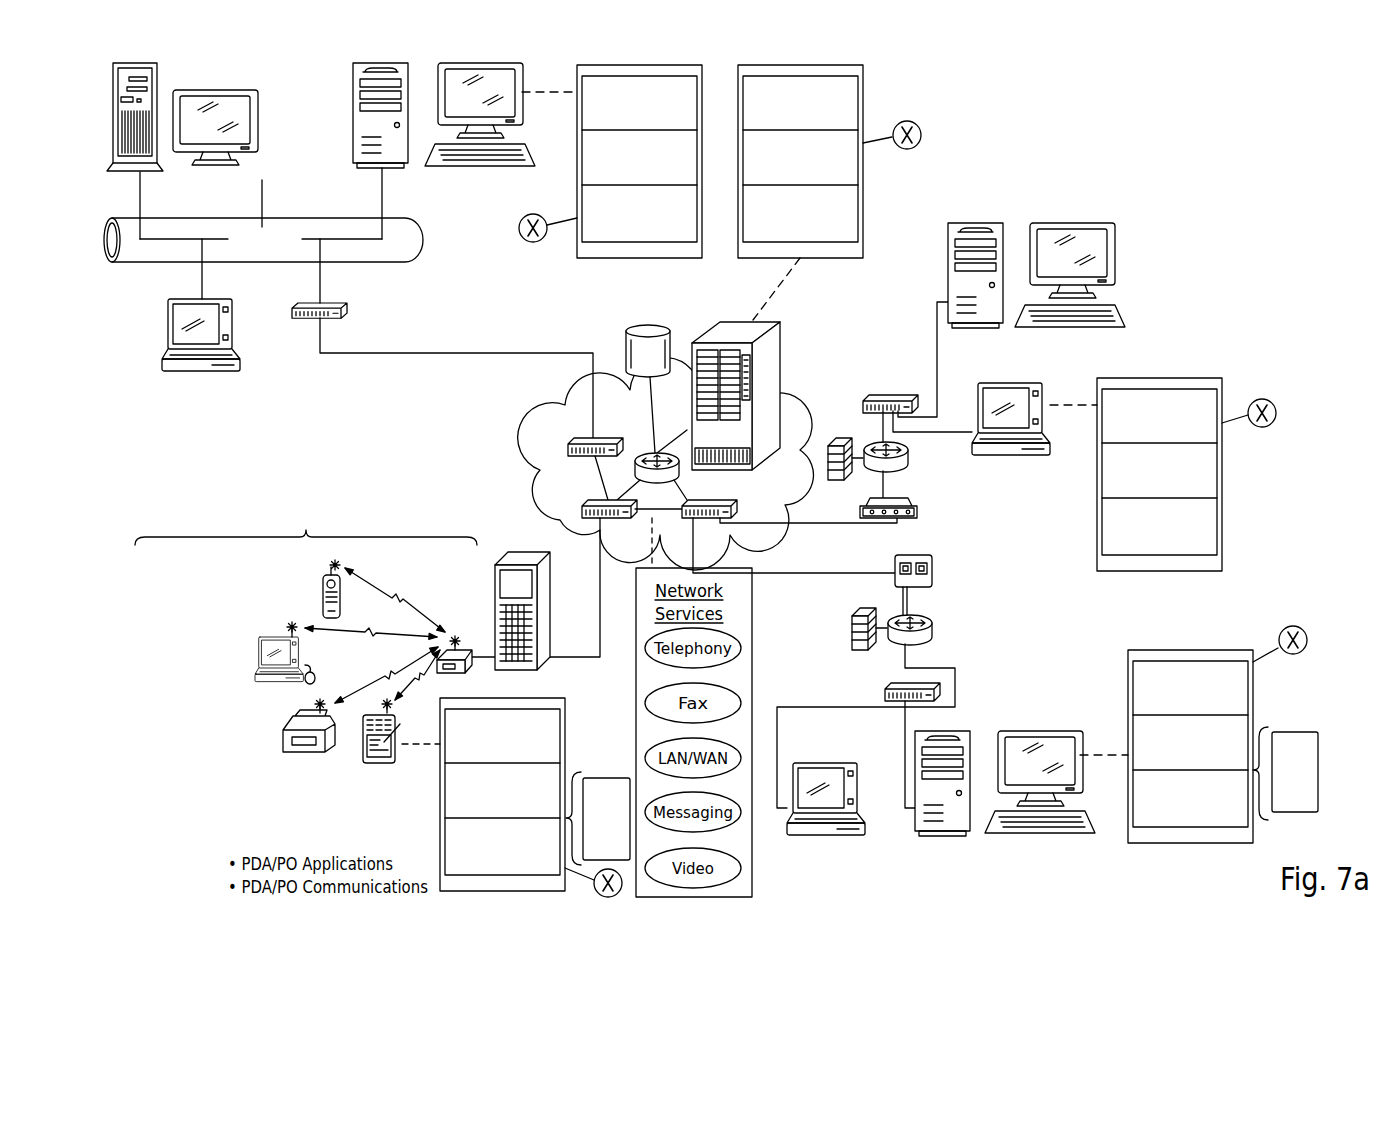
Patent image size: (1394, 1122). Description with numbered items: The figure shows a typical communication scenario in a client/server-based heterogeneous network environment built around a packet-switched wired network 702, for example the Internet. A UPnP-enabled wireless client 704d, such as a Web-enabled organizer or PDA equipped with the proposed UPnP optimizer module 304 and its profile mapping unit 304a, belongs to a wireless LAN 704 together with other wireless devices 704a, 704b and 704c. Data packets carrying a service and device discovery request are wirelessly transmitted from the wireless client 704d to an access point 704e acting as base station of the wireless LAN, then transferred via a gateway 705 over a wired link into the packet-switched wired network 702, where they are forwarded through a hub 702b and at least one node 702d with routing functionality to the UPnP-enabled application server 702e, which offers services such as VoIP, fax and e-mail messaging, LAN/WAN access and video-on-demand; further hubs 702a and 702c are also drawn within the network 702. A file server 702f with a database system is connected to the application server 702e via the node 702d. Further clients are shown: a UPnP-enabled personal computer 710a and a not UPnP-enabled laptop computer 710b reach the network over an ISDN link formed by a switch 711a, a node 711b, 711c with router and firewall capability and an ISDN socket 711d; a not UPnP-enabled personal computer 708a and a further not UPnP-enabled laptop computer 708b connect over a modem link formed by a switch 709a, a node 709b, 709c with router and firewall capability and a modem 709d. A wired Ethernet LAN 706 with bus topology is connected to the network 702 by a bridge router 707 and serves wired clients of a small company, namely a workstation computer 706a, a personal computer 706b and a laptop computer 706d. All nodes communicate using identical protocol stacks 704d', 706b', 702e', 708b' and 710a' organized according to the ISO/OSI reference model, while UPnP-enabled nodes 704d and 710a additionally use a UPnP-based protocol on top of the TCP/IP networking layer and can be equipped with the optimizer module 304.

The packet-switched wired network 702 is at (599, 463).
The network hub 702a is at (588, 469).
The hub 702b is at (575, 578).
The network hub 702c is at (789, 536).
The node with routing functionality 702d is at (652, 482).
The UPnP-enabled application server 702e is at (718, 407).
The protocol stack 702e' is at (834, 205).
The file server 702f is at (626, 388).
The wireless LAN 704 is at (306, 509).
The wireless telephone 704a is at (336, 587).
The wireless laptop 704b is at (296, 695).
The wireless printer 704c is at (337, 716).
The UPnP-enabled wireless client 704d is at (375, 742).
The protocol stack 704d' is at (531, 792).
The access point 704e is at (453, 670).
The gateway 705 is at (522, 599).
The wired Ethernet LAN 706 is at (285, 221).
The workstation computer 706a is at (182, 147).
The personal computer 706b is at (465, 151).
The protocol stack 706b' is at (610, 181).
The laptop computer 706d is at (201, 323).
The bridge router (brouter) 707 is at (442, 338).
The not UPnP-enabled personal computer 708a is at (1036, 261).
The not UPnP-enabled laptop computer 708b is at (1034, 435).
The protocol stack 708b' is at (1186, 493).
The switch 709a is at (917, 372).
The node with router and firewall capability 709b is at (912, 470).
The node with router and firewall capability 709c is at (837, 446).
The modem 709d is at (916, 510).
The UPnP-enabled personal computer 710a is at (1022, 814).
The protocol stack 710a' is at (1217, 731).
The not UPnP-enabled laptop computer 710b is at (826, 817).
The switch 711a is at (887, 743).
The node with router and firewall capability 711b is at (880, 711).
The node with router and firewall capability 711c is at (846, 629).
The ISDN socket 711d is at (937, 576).
The UPnP optimizer module 304 is at (942, 771).
The profile mapping unit 304a is at (947, 736).